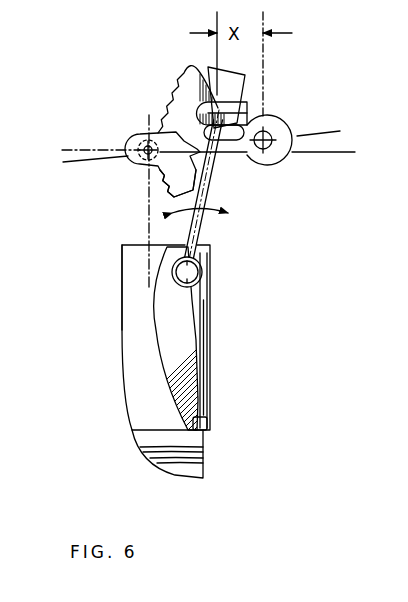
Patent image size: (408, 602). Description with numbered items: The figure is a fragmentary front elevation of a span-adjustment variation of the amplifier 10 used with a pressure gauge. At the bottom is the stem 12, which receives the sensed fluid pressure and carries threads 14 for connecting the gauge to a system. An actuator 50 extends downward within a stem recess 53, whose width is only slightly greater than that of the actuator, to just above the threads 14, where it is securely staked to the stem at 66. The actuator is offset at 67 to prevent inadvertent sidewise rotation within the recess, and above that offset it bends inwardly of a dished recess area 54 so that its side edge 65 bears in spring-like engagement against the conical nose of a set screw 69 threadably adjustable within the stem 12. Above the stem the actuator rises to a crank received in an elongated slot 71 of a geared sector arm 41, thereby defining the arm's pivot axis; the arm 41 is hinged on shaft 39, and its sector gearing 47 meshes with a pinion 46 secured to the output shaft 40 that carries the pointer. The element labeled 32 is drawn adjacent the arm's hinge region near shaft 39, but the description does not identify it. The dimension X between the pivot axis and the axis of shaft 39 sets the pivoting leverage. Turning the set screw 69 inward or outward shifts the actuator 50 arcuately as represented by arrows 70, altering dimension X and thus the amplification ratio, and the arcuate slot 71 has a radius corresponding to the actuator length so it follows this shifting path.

The amplifier 10 is at (122, 82).
The stem 12 is at (143, 405).
The threads 14 is at (188, 457).
The crank arm 32 is at (268, 106).
The shaft 39 is at (286, 158).
The shaft 40 is at (140, 167).
The sector arm 41 is at (187, 82).
The pinion 46 is at (138, 140).
The sector gearing 47 is at (170, 179).
The actuator 50 is at (200, 243).
The stem recess 53 is at (208, 363).
The dished recess area 54 is at (162, 333).
The side edge 65 is at (166, 299).
The staking location 66 is at (206, 423).
The offset 67 is at (202, 320).
The set screw 69 is at (190, 273).
The arrows 70 is at (210, 208).
The elongated slot 71 is at (238, 103).